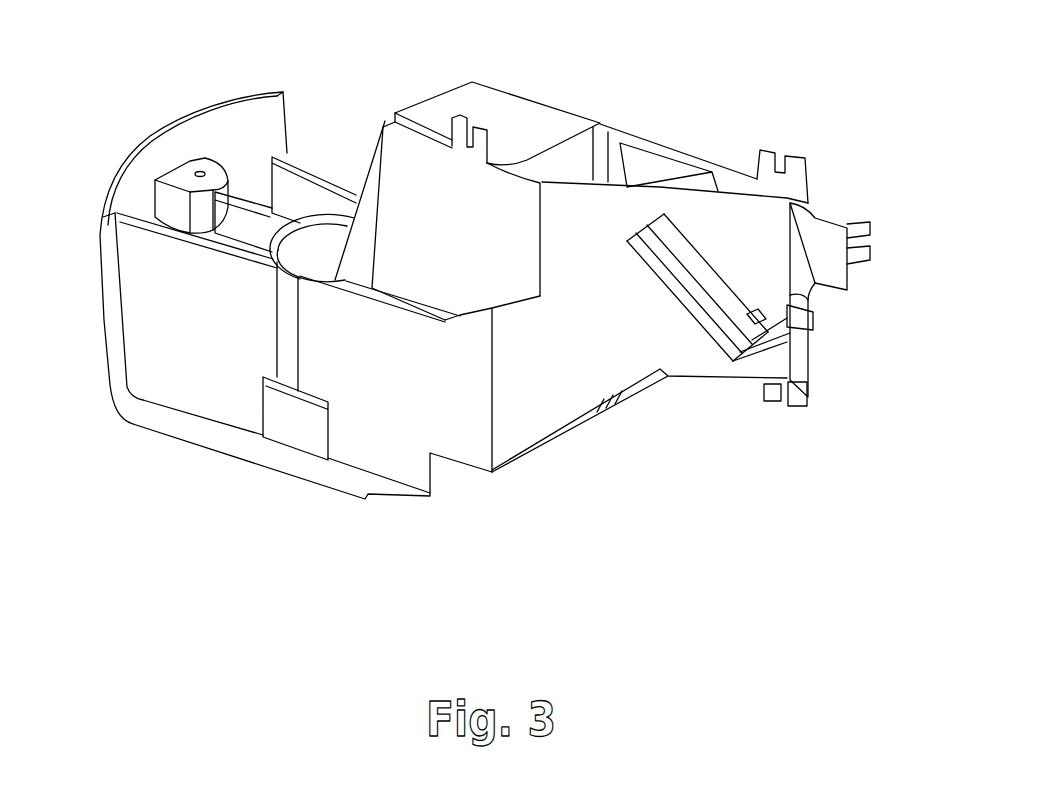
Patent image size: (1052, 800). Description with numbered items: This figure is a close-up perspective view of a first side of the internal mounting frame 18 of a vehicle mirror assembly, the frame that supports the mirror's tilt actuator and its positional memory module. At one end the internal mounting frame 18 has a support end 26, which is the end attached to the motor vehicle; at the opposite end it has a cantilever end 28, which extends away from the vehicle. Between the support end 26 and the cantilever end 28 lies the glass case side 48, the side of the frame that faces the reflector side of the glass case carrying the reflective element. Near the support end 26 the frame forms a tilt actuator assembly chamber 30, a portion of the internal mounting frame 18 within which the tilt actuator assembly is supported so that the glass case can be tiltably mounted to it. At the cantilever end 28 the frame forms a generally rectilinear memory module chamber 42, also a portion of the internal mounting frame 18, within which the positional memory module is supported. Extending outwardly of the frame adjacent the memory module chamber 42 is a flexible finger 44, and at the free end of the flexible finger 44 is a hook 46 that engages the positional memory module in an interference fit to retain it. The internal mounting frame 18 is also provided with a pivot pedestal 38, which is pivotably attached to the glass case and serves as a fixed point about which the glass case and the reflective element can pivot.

The internal mounting frame 18 is at (136, 488).
The support end 26 is at (207, 104).
The tilt actuator assembly chamber 30 is at (445, 90).
The glass case side 48 is at (658, 148).
The pivot pedestal 38 is at (827, 205).
The cantilever end 28 is at (818, 356).
The hook 46 is at (763, 337).
The flexible finger 44 is at (757, 327).
The memory module chamber 42 is at (731, 303).